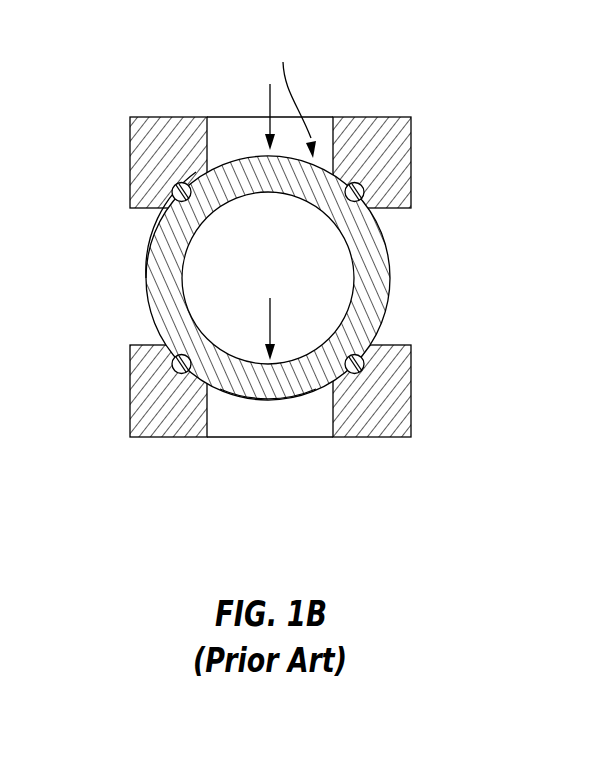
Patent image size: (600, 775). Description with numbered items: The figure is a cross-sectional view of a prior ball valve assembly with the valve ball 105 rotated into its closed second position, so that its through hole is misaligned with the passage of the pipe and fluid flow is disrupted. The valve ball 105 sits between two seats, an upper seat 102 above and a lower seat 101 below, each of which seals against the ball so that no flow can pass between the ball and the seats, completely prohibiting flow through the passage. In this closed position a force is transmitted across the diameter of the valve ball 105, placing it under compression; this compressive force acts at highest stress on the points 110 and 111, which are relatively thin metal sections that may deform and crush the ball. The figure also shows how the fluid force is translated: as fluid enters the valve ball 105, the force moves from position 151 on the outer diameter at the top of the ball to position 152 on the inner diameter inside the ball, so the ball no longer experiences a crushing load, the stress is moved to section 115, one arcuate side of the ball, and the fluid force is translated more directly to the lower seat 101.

The lower seat 101 is at (400, 418).
The upper seat 102 is at (398, 148).
The valve ball 105 is at (290, 93).
The point of highest stress 110 is at (387, 263).
The point of highest stress 111 is at (157, 280).
The arcuate side section 115 is at (268, 402).
The outer diameter position 151 is at (270, 102).
The inner diameter position 152 is at (270, 300).